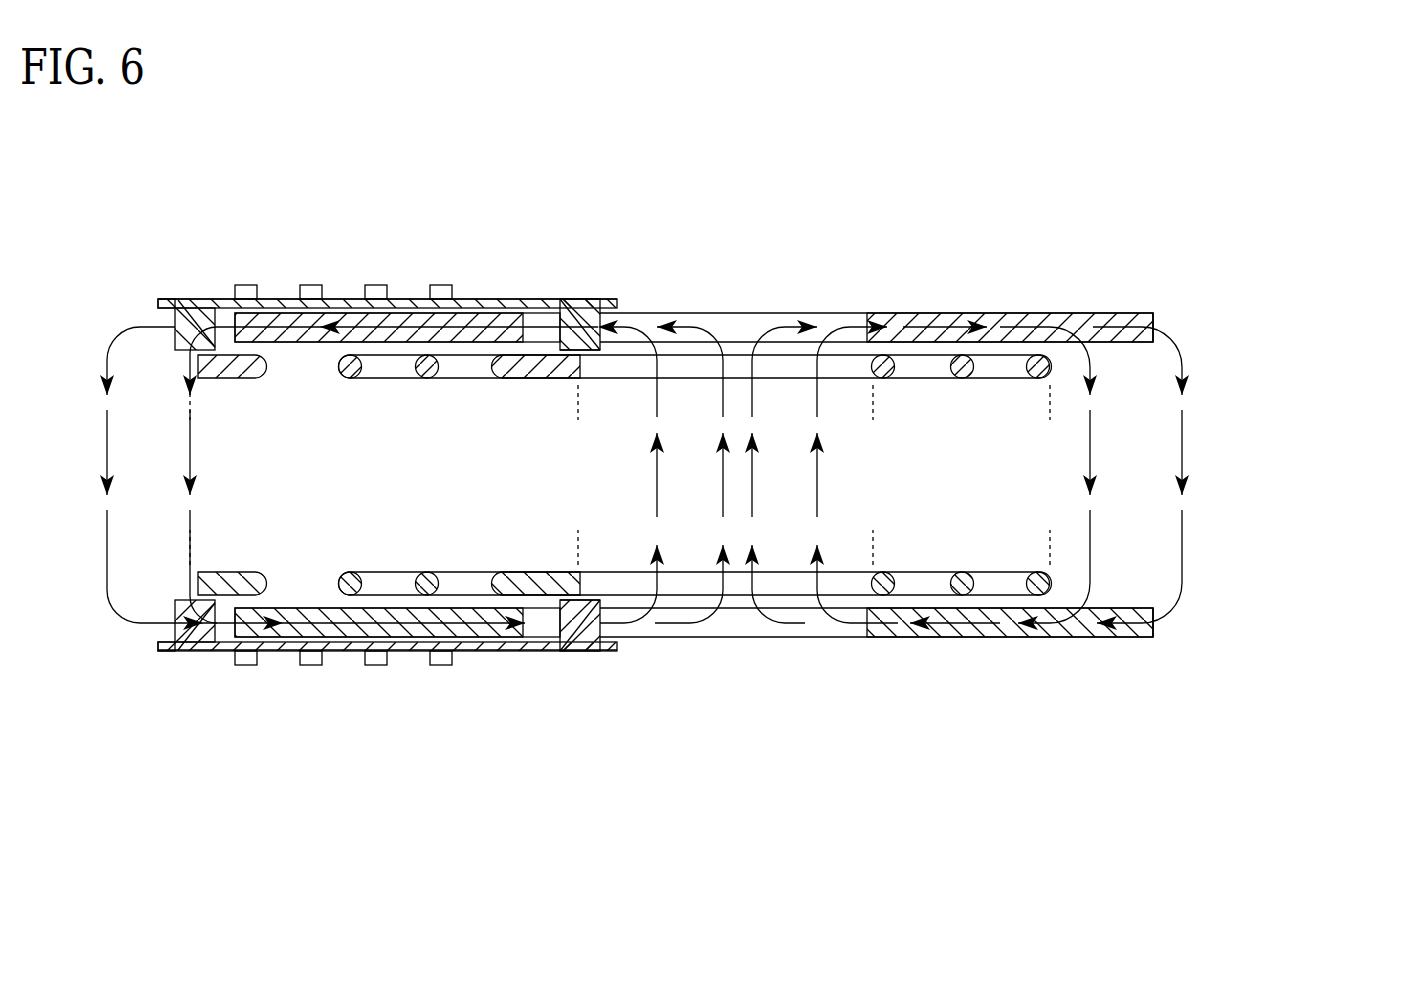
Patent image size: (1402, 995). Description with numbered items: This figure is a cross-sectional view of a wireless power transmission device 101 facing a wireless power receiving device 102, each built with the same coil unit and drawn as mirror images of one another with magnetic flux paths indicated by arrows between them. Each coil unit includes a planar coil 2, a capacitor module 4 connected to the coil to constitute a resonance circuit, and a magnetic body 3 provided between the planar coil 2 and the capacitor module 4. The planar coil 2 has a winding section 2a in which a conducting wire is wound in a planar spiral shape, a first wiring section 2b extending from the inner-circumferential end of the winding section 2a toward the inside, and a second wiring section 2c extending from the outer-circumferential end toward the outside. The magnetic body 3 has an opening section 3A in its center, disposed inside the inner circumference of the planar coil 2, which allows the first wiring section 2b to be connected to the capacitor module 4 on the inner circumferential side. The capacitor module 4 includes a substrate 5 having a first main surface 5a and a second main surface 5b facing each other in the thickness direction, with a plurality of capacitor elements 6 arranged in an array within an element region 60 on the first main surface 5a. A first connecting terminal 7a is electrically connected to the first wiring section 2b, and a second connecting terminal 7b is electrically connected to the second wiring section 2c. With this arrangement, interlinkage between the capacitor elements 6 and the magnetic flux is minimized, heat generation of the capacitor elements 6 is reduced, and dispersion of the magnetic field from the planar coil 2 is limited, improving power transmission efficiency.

The planar coil 2 is at (445, 395).
The winding section 2a is at (190, 410).
The first wiring section 2b is at (540, 380).
The second wiring section 2c is at (240, 372).
The magnetic body 3 is at (1135, 305).
The opening section 3A is at (866, 314).
The capacitor module 4 is at (163, 288).
The substrate 5 is at (617, 303).
The first main surface 5a is at (578, 298).
The second main surface 5b is at (168, 318).
The capacitor element 6 is at (452, 284).
The element region 60 is at (452, 268).
The first connecting terminal 7a is at (595, 352).
The second connecting terminal 7b is at (185, 340).
The wireless power transmission device 101 is at (1055, 777).
The wireless power receiving device 102 is at (1055, 180).